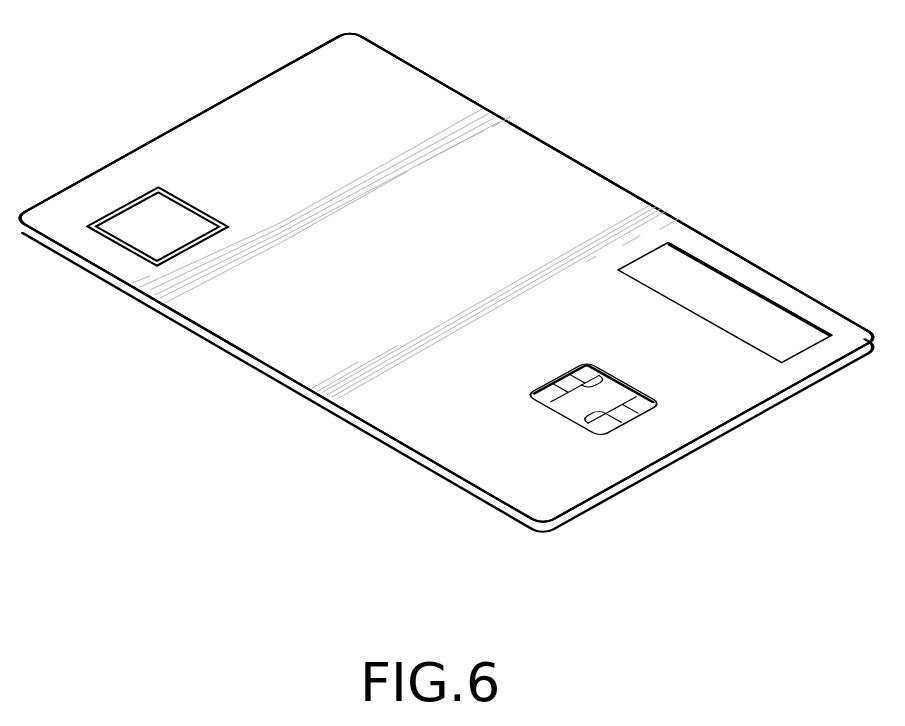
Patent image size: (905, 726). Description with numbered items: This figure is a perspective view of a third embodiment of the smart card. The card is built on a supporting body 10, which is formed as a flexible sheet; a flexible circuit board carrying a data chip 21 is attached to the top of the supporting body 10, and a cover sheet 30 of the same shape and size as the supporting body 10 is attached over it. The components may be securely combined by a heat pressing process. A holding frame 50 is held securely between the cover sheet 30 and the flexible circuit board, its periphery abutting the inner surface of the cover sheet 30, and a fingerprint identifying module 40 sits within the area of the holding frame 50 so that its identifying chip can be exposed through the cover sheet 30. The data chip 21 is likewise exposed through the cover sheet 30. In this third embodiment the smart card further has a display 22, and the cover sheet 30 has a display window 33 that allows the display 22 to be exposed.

The supporting body 10 is at (763, 413).
The data chip 21 is at (558, 392).
The display 22 is at (695, 285).
The cover sheet 30 is at (557, 145).
The display window 33 is at (792, 320).
The fingerprint identifying module 40 is at (180, 224).
The holding frame 50 is at (124, 207).